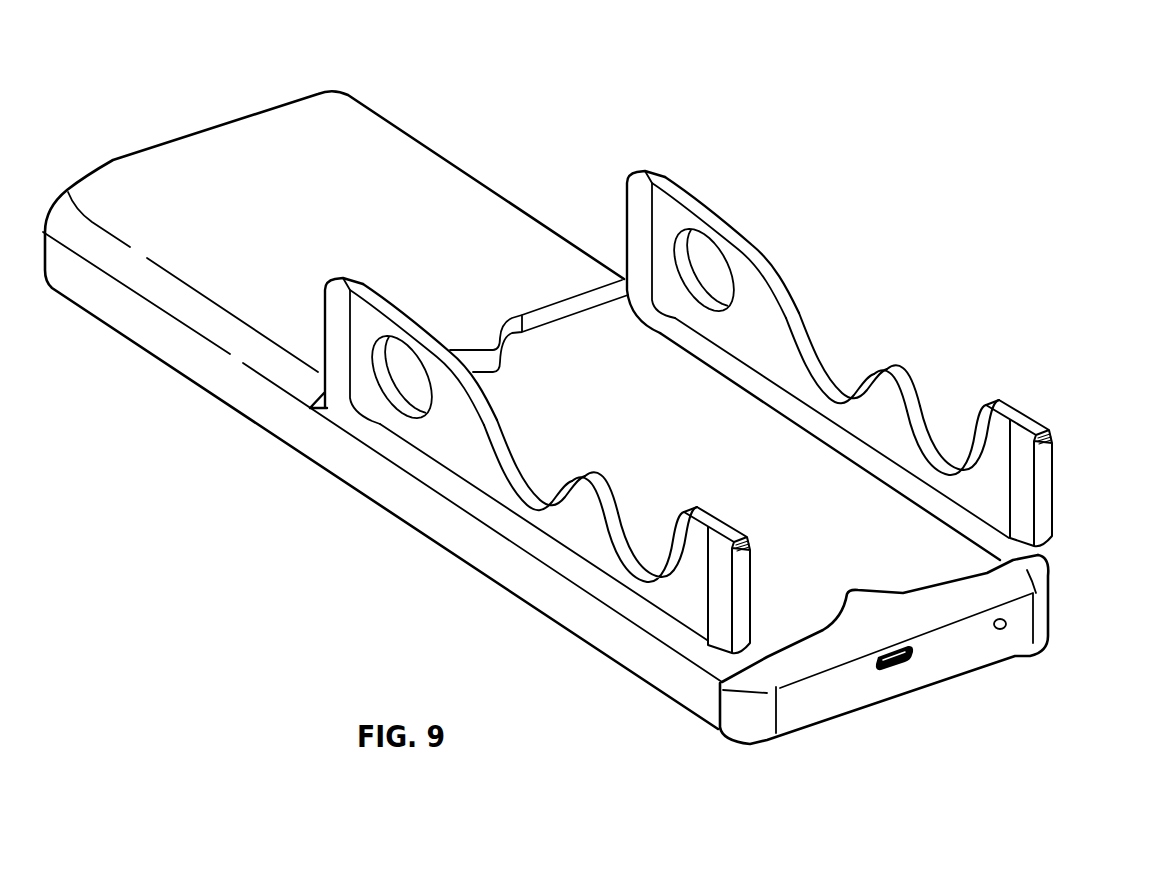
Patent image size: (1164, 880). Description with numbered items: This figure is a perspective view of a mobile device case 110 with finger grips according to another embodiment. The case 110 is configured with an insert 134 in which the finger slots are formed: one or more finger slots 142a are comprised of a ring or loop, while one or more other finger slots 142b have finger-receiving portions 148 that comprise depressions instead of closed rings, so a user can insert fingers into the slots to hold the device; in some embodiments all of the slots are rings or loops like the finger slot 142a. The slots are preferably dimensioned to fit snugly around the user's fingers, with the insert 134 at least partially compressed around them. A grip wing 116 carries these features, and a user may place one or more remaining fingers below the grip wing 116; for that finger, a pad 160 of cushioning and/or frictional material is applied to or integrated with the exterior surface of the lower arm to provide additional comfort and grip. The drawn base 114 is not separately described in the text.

The case 110 is at (797, 42).
The base 114 is at (398, 136).
The grip wing 116 is at (323, 317).
The insert 134 is at (580, 527).
The finger slot 142a is at (405, 345).
The finger slot 142b is at (818, 397).
The finger-receiving portion 148 is at (835, 388).
The pad 160 is at (737, 613).